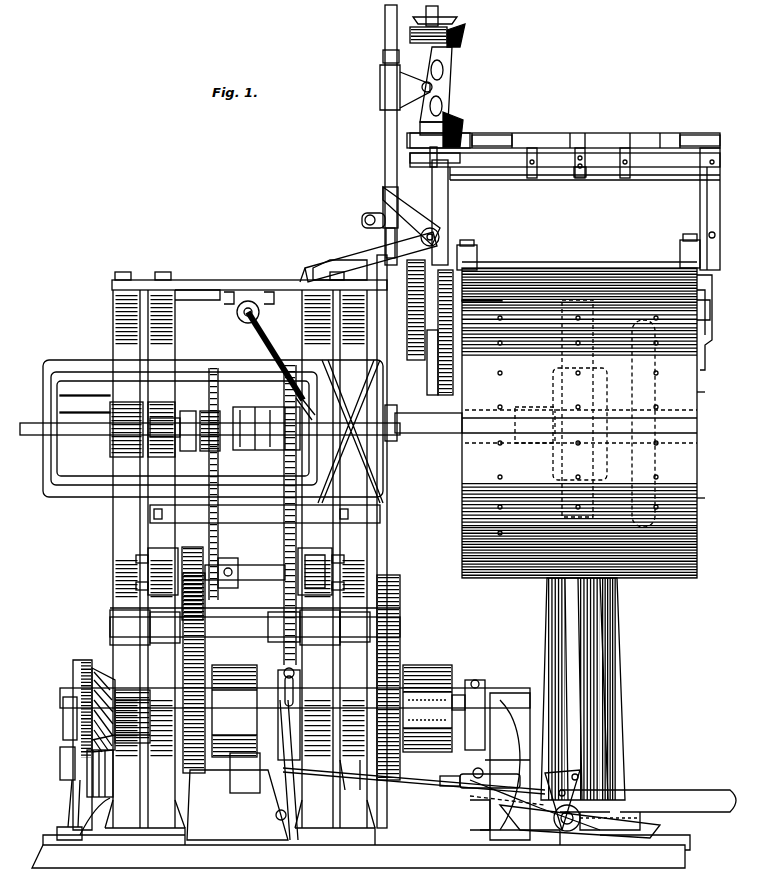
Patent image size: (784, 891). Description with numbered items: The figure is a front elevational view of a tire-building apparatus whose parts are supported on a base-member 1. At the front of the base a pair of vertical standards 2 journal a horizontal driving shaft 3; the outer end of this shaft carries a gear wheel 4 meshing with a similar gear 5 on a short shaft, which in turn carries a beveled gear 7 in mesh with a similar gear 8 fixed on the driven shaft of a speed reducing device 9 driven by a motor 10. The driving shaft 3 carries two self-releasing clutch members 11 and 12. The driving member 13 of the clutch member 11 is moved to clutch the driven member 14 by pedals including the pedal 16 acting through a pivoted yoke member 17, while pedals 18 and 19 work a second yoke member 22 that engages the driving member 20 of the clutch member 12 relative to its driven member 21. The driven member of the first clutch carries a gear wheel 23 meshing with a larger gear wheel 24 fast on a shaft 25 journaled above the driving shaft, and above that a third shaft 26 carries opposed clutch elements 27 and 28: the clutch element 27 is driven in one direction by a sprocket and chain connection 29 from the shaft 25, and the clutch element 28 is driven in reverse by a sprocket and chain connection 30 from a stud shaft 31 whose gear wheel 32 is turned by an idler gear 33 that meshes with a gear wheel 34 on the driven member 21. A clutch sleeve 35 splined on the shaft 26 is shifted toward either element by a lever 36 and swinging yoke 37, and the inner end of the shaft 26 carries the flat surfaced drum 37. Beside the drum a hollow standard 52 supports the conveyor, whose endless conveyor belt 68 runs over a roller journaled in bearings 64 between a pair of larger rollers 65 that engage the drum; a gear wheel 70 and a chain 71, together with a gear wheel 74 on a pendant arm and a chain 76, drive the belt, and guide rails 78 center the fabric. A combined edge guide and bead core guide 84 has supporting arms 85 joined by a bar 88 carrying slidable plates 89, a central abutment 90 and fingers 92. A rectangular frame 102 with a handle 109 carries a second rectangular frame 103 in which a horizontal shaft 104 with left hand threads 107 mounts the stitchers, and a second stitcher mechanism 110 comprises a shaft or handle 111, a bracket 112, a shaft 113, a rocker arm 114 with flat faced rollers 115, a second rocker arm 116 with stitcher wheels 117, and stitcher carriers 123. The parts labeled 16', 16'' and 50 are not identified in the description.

The base-member 1 is at (361, 848).
The standards 2 is at (113, 578).
The horizontal driving shaft 3 is at (300, 690).
The gear wheel 4 is at (132, 710).
The gear 5 is at (132, 717).
The beveled gear 7 is at (73, 676).
The beveled gear 8 is at (100, 672).
The speed reducing device 9 is at (75, 797).
The motor 10 is at (392, 816).
The clutch member 11 is at (434, 666).
The clutch member 12 is at (236, 721).
The driving member 13 is at (466, 680).
The driven member 14 is at (427, 709).
The pedal 16 is at (648, 812).
The drum flange 16' is at (719, 497).
The drum flange 16'' is at (721, 393).
The pivoted yoke member 17 is at (414, 777).
The pedal 18 is at (580, 821).
The pedal 19 is at (535, 800).
The driving member 20 is at (270, 688).
The driven member 21 is at (234, 711).
The second yoke member 22 is at (276, 803).
The gear wheel 23 is at (362, 778).
The larger gear wheel 24 is at (402, 602).
The shaft 25 is at (244, 622).
The third shaft 26 is at (428, 436).
The clutch element 27 is at (283, 455).
The clutch element 28 is at (220, 410).
The sprocket and chain connection 29 is at (321, 564).
The sprocket and chain connection 30 is at (222, 552).
The stud shaft 31 is at (248, 583).
The gear wheel 32 is at (188, 554).
The idler gear 33 is at (110, 607).
The gear wheel 34 is at (206, 660).
The clutch sleeve 35 is at (245, 452).
The lever 36 is at (260, 320).
The flat surfaced drum 37 is at (262, 342).
The bracket 50 is at (714, 336).
The hollow standard 52 is at (604, 689).
The bearings 64 is at (718, 312).
The rollers 65 is at (472, 240).
The endless conveyor belt 68 is at (580, 268).
The gear wheel 70 is at (482, 312).
The chain 71 is at (407, 318).
The gear wheel 74 is at (428, 384).
The chain 76 is at (438, 340).
The guide rails 78 is at (670, 262).
The combined edge guide and bead core guide 84 is at (563, 133).
The supporting arms 85 is at (720, 193).
The bar 88 is at (720, 170).
The plates 89 is at (555, 131).
The abutment 90 is at (578, 180).
The finger 92 is at (480, 150).
The rectangular frame 102 is at (88, 354).
The second rectangular frame 103 is at (85, 395).
The horizontal shaft 104 is at (85, 414).
The left hand threads 107 is at (205, 508).
The handle 109 is at (40, 437).
The second stitcher mechanism 110 is at (450, 84).
The shaft or handle 111 is at (385, 29).
The bracket 112 is at (380, 92).
The shaft 113 is at (405, 80).
The rocker arm 114 is at (450, 101).
The flat faced roller 115 is at (466, 36).
The second rocker arm 116 is at (383, 55).
The stitcher wheel 117 is at (440, 15).
The stitcher carrier 123 is at (462, 50).